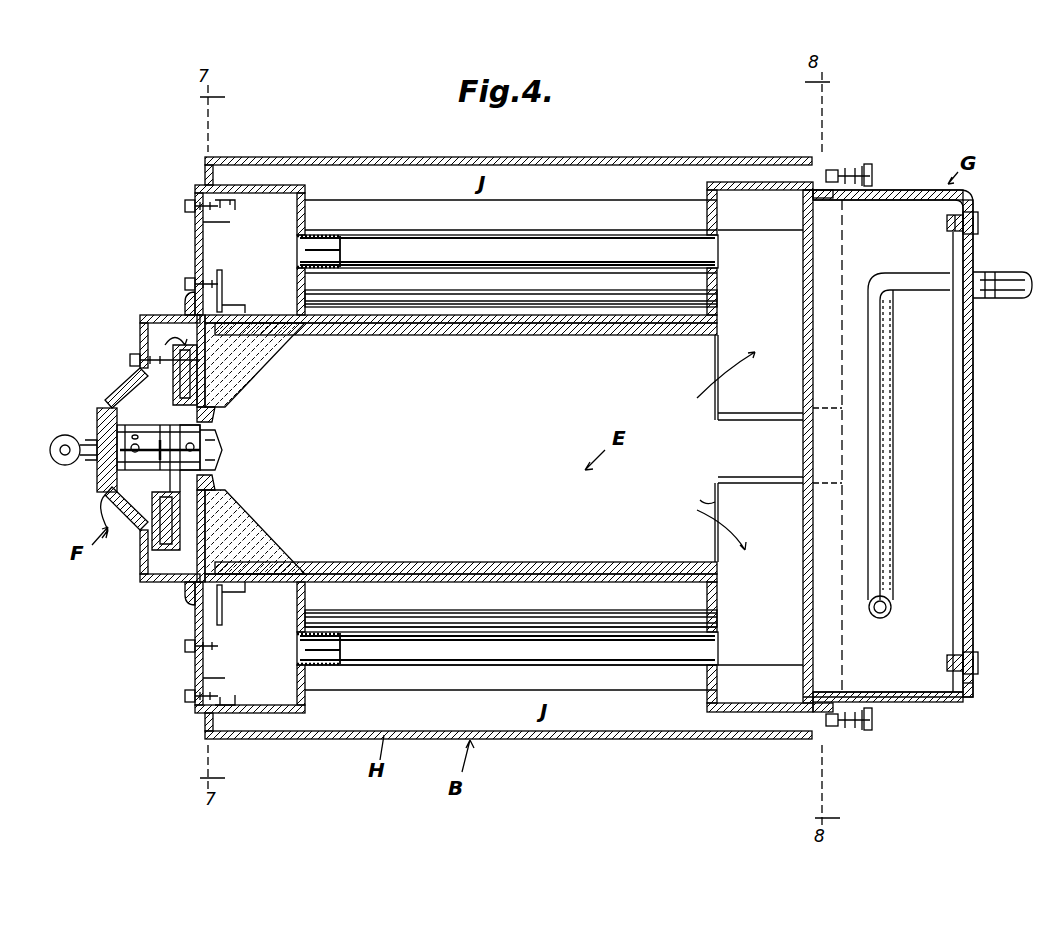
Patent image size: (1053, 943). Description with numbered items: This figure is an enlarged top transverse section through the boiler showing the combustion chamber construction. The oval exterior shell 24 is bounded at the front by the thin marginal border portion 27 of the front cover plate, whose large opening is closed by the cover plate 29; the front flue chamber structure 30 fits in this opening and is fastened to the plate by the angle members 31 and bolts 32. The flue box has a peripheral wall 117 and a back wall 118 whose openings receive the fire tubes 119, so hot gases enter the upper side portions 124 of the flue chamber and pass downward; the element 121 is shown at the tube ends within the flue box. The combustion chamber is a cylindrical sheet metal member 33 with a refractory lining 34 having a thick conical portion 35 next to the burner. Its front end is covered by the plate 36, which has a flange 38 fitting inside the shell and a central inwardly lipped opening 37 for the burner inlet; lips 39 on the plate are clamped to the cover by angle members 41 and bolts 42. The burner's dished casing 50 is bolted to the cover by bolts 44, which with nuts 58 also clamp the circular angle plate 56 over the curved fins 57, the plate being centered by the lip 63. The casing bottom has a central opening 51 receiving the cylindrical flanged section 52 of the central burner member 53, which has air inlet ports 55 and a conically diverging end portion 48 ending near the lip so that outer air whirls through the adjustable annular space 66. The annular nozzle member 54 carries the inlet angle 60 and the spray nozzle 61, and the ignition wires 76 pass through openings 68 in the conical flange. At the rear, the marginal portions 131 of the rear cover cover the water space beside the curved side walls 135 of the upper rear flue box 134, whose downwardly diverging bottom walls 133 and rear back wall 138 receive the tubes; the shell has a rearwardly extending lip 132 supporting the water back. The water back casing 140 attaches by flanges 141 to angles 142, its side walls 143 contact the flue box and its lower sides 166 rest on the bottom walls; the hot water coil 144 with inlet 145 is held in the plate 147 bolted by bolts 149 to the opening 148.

The exterior shell 24 is at (612, 157).
The marginal border portion 27 is at (205, 172).
The cover plate 29 is at (195, 248).
The front flue chamber structure 30 is at (297, 222).
The angle members 31 is at (228, 198).
The bolts 32 is at (185, 210).
The upper side portions of the flue chamber 124 is at (200, 223).
The angle members 41 is at (222, 280).
The bolts 42 is at (185, 282).
The flange or angle 38 is at (230, 305).
The lips 39 is at (185, 303).
The cylindrical sheet metal member 33 is at (585, 335).
The refractory lining 34 is at (482, 335).
The peripheral wall 117 is at (305, 192).
The back wall 118 is at (305, 212).
The roller sleeve 121 is at (372, 335).
The fire tubes 119 is at (660, 305).
The conical portion of lining 35 is at (270, 362).
The cover plate 36 is at (197, 575).
The dished casing 50 is at (140, 332).
The bolts 44 is at (130, 364).
The curved fins 57 is at (190, 375).
The nuts 58 is at (175, 340).
The inlet angle 60 is at (52, 455).
The cylindrical flanged section 52 is at (97, 478).
The central opening 51 is at (100, 408).
The air inlet ports 55 is at (134, 434).
The annular nozzle member 54 is at (85, 445).
The inwardly lipped opening 37 is at (208, 420).
The openings 68 is at (195, 430).
The central burner member 53 is at (196, 447).
The ignition wires 76 is at (222, 450).
The spray nozzle 61 is at (225, 455).
The adjustable annular space 66 is at (190, 485).
The conically diverging end portion 48 is at (165, 440).
The outwardly projecting lip 63 is at (112, 492).
The circular angle plate 56 is at (150, 550).
The upper rear flue box 134 is at (712, 200).
The curved side walls 135 is at (770, 182).
The rearwardly extending lip 132 is at (820, 443).
The rear back wall 138 is at (718, 218).
The downwardly diverging bottom walls 133 is at (725, 405).
The marginal portions 131 is at (818, 180).
The angles 142 is at (852, 168).
The flanges 141 is at (872, 168).
The side walls of the water back 143 is at (880, 240).
The plate 147 is at (973, 570).
The lower sides of the water back 166 is at (915, 225).
The bolts 149 is at (978, 222).
The opening 148 is at (953, 638).
The casing 140 is at (955, 702).
The hot water coil 144 is at (888, 485).
The inlet 145 is at (1010, 298).